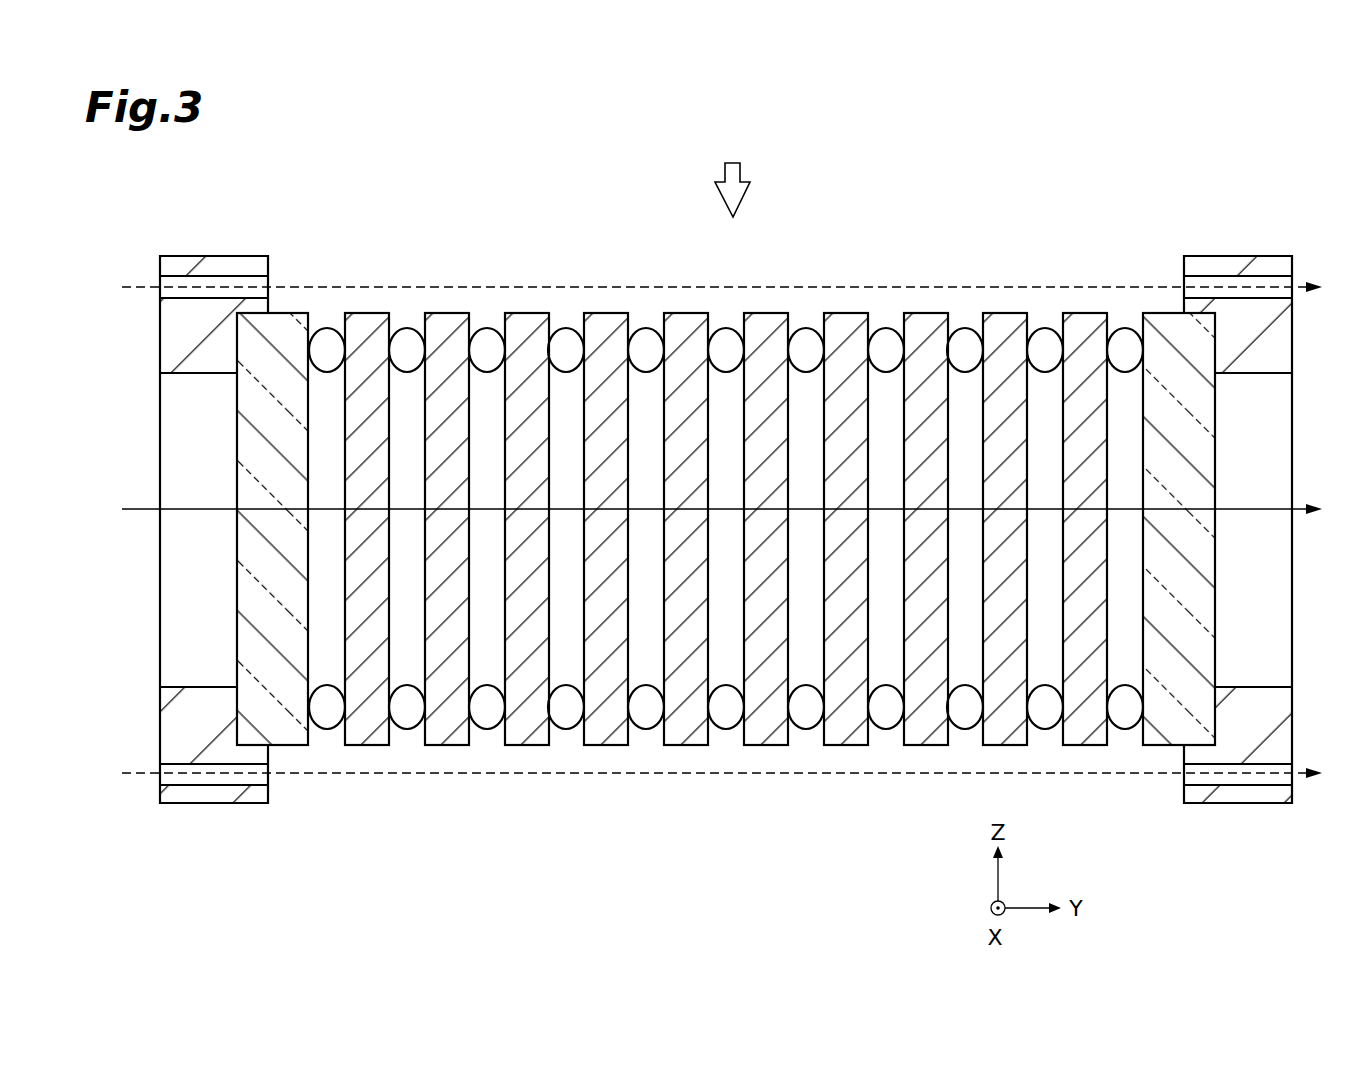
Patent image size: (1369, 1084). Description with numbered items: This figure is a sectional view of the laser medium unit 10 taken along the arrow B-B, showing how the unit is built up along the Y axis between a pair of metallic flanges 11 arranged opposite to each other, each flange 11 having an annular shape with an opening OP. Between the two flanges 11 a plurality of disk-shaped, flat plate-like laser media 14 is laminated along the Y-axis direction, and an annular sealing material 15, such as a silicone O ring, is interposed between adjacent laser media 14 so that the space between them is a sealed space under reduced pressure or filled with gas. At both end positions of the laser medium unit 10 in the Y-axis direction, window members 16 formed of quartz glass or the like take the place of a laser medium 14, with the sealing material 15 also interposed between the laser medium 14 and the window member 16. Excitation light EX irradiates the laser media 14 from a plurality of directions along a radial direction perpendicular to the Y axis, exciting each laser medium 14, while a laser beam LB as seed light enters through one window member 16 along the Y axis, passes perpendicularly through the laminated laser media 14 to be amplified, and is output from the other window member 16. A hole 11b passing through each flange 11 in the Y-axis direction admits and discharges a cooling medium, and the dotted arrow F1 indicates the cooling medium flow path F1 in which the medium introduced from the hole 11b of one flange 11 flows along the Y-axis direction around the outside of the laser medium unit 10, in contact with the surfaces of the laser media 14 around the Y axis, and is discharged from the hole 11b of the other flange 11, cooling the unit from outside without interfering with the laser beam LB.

The laser medium unit 10 is at (920, 192).
The flange 11 is at (225, 737).
The hole 11b is at (182, 283).
The laser medium 14 is at (608, 330).
The sealing material 15 is at (566, 718).
The window member 16 is at (258, 328).
The laser beam LB is at (647, 509).
The cooling medium flow path F1 is at (607, 287).
The opening OP is at (185, 603).
The excitation light EX is at (732, 175).